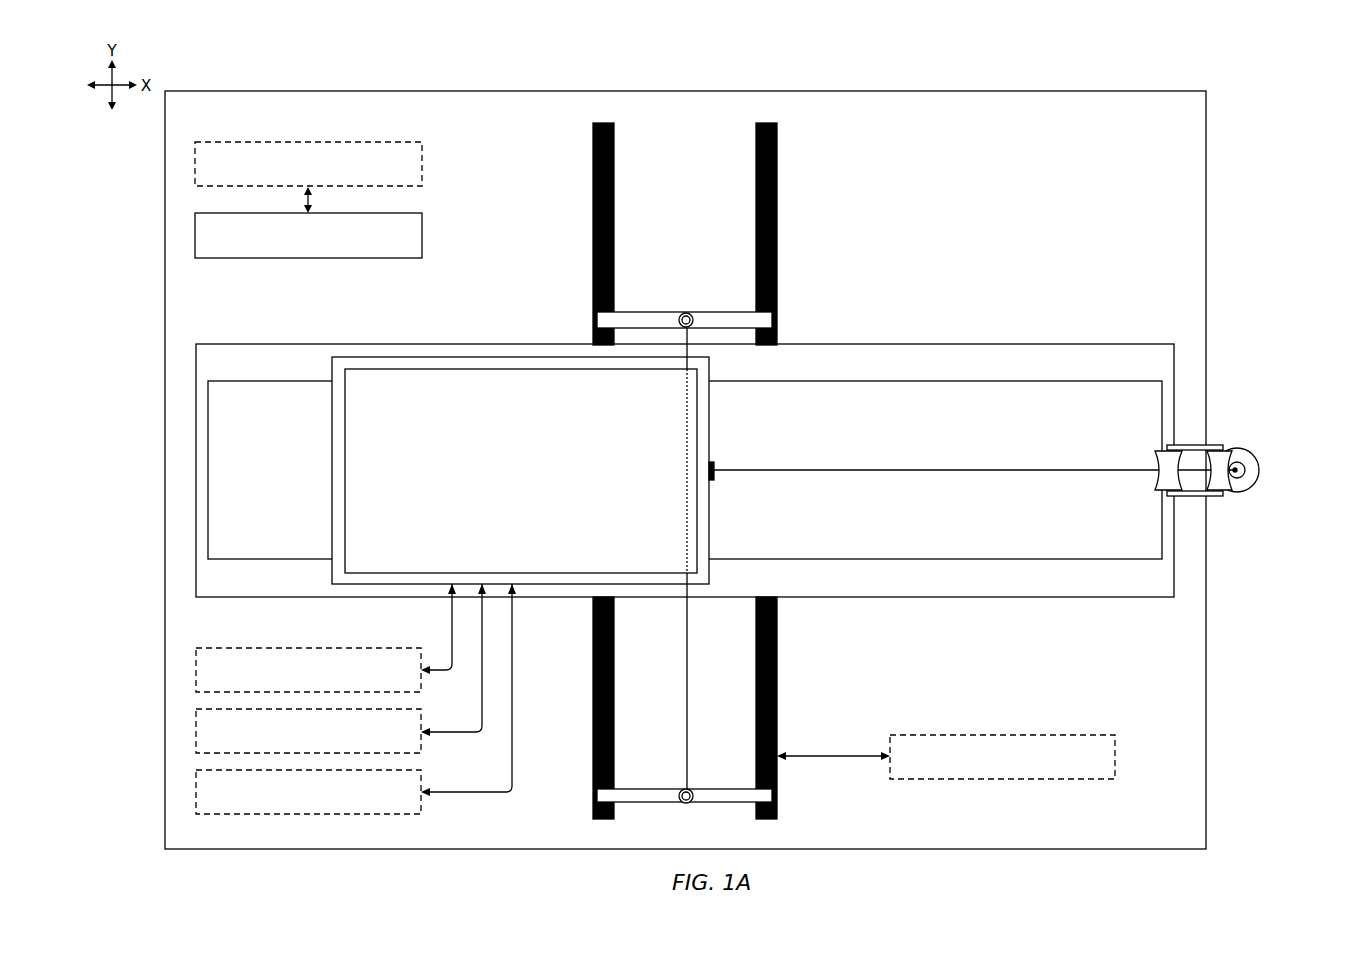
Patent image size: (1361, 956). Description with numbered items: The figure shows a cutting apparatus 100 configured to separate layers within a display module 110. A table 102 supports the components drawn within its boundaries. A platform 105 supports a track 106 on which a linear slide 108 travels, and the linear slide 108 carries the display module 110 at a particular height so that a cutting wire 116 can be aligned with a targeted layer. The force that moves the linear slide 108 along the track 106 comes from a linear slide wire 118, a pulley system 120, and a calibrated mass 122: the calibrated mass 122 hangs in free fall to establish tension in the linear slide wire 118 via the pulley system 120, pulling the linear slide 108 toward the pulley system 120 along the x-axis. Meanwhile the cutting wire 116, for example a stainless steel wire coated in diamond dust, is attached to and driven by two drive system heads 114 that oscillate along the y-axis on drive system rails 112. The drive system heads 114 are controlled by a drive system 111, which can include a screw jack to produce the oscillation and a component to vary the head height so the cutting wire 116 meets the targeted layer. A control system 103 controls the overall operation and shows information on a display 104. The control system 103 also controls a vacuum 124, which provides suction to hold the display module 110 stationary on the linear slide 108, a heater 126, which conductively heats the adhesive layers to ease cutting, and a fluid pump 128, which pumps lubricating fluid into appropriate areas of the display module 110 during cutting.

The cutting apparatus 100 is at (1262, 75).
The table 102 is at (685, 470).
The control system 103 is at (308, 164).
The display 104 is at (308, 235).
The platform 105 is at (685, 470).
The track 106 is at (685, 470).
The linear slide 108 is at (346, 357).
The display module 110 is at (521, 471).
The drive system 111 is at (946, 757).
The drive system rails 112 is at (777, 184).
The drive system heads 114 is at (686, 312).
The cutting wire 116 is at (687, 677).
The linear slide wire 118 is at (898, 470).
The pulley system 120 is at (1213, 496).
The calibrated mass 122 is at (1234, 448).
The vacuum 124 is at (326, 638).
The heater 126 is at (341, 668).
The fluid pump 128 is at (356, 699).